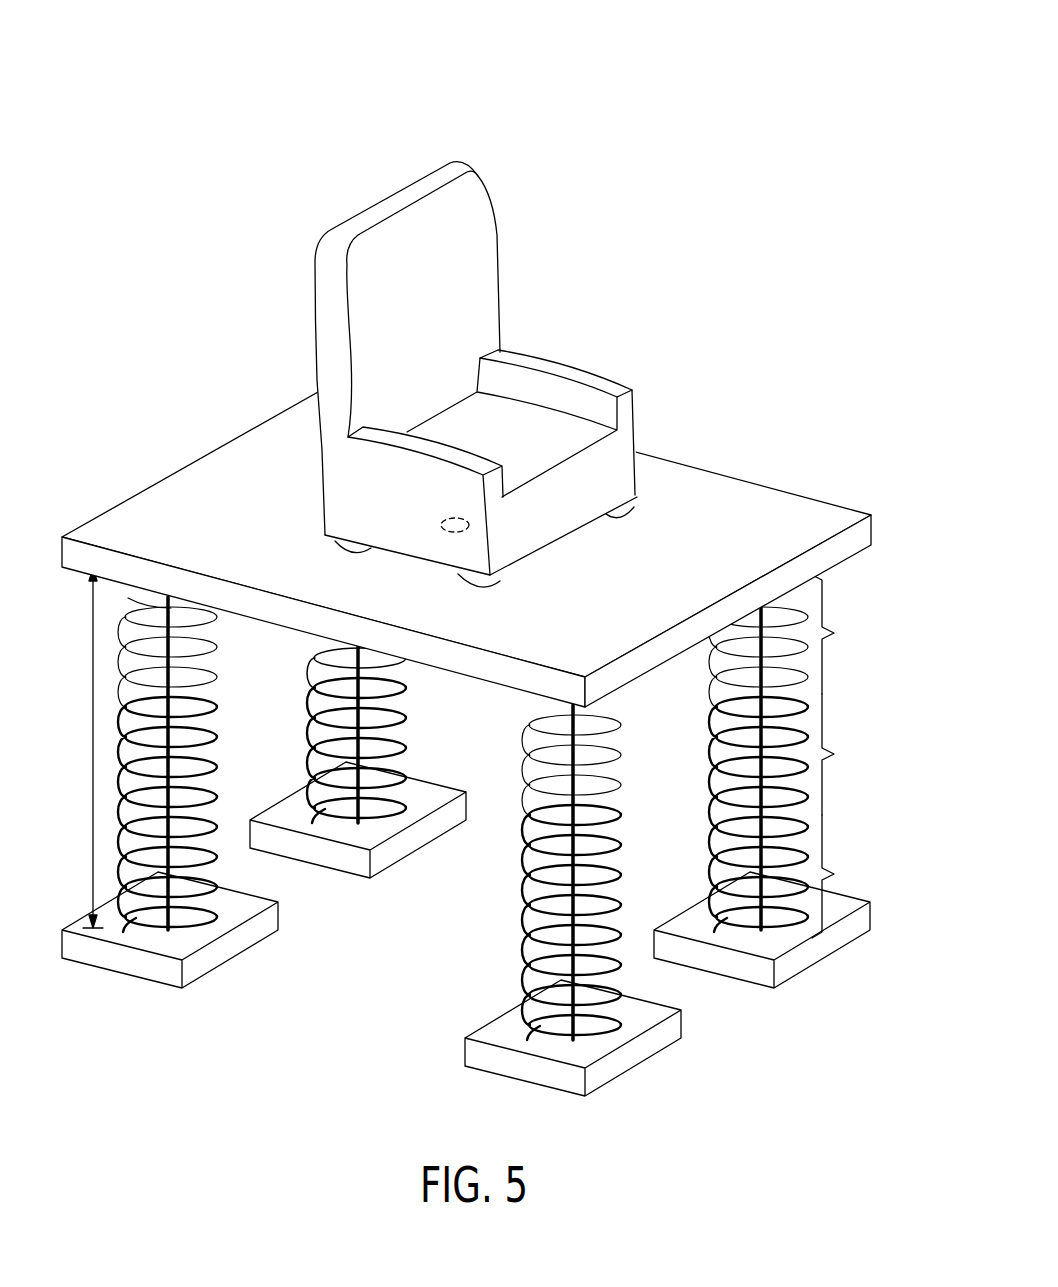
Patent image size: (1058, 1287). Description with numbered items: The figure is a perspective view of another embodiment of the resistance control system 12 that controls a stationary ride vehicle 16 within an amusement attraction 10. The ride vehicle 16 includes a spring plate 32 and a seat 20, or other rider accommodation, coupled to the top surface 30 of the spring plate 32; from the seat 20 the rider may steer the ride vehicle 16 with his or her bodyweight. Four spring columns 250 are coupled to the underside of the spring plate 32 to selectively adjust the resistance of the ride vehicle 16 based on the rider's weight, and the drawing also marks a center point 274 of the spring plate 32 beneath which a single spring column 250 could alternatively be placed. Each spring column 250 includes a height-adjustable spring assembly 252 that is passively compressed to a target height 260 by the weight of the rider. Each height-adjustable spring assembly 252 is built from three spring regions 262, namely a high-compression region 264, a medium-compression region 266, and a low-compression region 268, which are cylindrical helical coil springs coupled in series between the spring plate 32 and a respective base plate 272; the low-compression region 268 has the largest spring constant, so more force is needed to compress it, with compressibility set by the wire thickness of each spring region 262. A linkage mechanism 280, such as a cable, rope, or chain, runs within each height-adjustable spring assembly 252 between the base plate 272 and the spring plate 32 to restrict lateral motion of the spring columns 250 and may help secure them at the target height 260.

The amusement attraction 10 is at (697, 82).
The resistance control system 12 is at (616, 122).
The ride vehicle 16 is at (843, 457).
The seat 20 is at (500, 250).
The top surface 30 is at (780, 517).
The spring plate 32 is at (725, 507).
The spring column 250 is at (224, 672).
The height-adjustable spring assembly 252 is at (219, 701).
The target height 260 is at (94, 747).
The spring region 262 is at (874, 756).
The high-compression region 264 is at (874, 634).
The medium-compression region 266 is at (879, 754).
The low-compression region 268 is at (874, 876).
The base plate 272 is at (228, 961).
The center point 274 is at (443, 530).
The linkage mechanism 280 is at (537, 943).